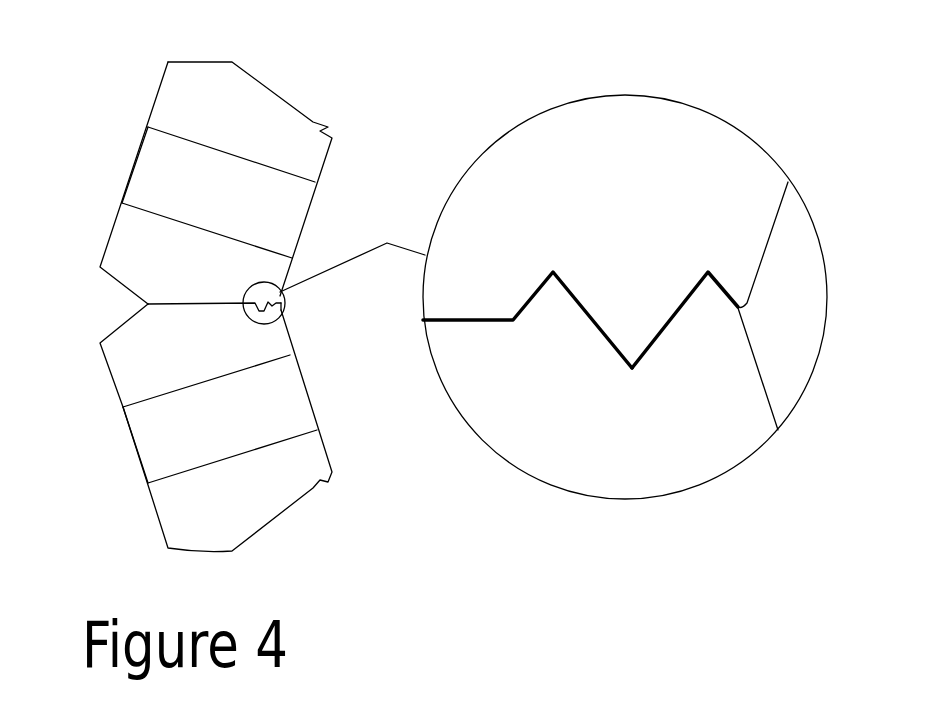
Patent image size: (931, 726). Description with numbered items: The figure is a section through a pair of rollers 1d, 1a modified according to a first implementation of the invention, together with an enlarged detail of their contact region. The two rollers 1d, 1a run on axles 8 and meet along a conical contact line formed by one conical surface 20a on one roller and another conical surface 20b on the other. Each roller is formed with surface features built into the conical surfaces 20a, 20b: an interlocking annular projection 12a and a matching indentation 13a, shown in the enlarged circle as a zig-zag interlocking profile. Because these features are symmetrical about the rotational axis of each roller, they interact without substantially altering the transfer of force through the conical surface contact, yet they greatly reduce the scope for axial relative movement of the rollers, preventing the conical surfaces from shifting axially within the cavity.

The roller 1d is at (237, 112).
The roller 1a is at (262, 485).
The axle 8 is at (172, 190).
The conical surface 20a is at (205, 292).
The conical surface 20b is at (198, 313).
The interlocking annular projection 12a is at (627, 337).
The indentation 13a is at (648, 360).